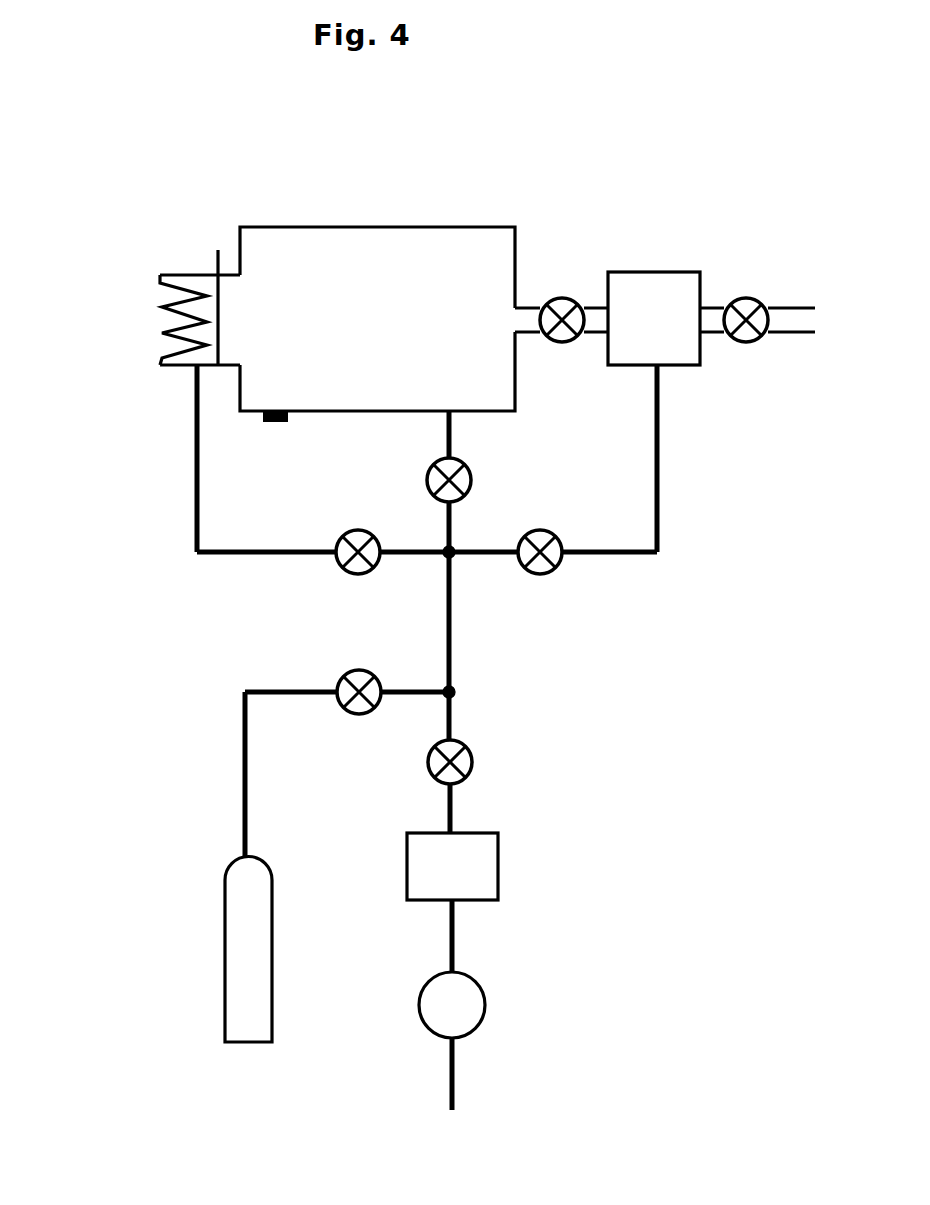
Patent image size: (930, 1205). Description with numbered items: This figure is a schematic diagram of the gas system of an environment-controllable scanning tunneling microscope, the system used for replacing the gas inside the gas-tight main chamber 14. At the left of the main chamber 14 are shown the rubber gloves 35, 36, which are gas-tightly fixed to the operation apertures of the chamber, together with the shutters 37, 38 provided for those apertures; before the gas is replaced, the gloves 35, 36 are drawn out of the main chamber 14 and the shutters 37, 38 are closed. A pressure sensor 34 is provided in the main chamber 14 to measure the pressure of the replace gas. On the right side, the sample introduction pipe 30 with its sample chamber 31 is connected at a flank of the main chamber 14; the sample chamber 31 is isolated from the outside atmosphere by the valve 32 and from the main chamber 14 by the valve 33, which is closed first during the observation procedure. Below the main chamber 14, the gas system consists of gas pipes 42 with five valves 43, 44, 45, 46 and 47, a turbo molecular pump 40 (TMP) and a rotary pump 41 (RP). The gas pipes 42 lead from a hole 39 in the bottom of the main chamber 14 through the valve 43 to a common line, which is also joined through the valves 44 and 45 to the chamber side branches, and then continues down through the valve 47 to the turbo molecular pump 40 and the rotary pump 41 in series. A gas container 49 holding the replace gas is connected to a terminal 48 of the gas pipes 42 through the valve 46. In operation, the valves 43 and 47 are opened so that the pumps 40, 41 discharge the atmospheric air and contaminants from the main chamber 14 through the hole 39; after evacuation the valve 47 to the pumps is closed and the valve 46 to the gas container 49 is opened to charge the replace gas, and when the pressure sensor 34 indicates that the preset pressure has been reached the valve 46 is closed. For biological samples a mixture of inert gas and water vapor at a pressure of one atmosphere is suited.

The main chamber 14 is at (383, 240).
The sample introduction pipe 30 is at (793, 317).
The sample chamber 31 is at (650, 278).
The valve 32 is at (742, 302).
The valve 33 is at (560, 300).
The pressure sensor 34 is at (278, 426).
The rubber glove 35 is at (136, 311).
The rubber glove 36 is at (165, 305).
The shutter 37 is at (205, 271).
The shutter 38 is at (218, 250).
The hole 39 is at (450, 410).
The turbo molecular pump 40 is at (487, 884).
The rotary pump 41 is at (480, 1012).
The gas pipes 42 is at (455, 622).
The valve 43 is at (462, 483).
The valve 44 is at (358, 533).
The valve 45 is at (590, 535).
The valve 46 is at (358, 673).
The valve 47 is at (463, 765).
The terminal 48 is at (244, 780).
The gas container 49 is at (232, 933).